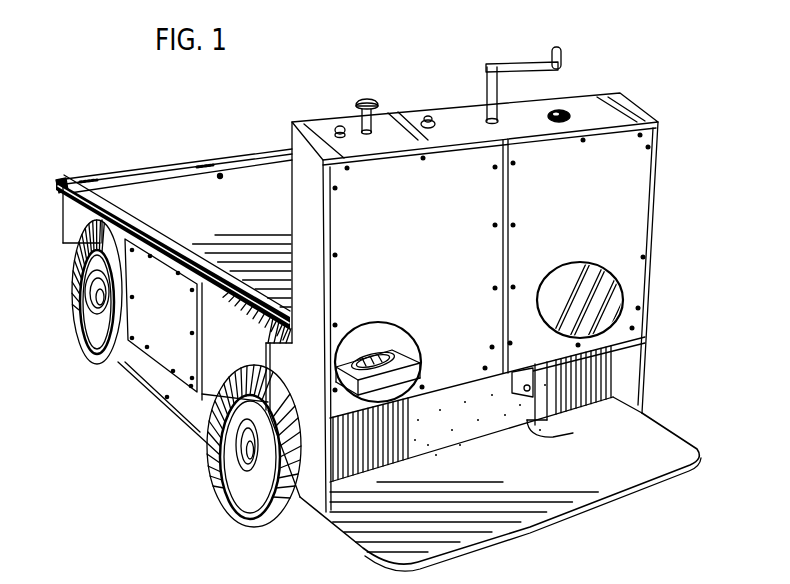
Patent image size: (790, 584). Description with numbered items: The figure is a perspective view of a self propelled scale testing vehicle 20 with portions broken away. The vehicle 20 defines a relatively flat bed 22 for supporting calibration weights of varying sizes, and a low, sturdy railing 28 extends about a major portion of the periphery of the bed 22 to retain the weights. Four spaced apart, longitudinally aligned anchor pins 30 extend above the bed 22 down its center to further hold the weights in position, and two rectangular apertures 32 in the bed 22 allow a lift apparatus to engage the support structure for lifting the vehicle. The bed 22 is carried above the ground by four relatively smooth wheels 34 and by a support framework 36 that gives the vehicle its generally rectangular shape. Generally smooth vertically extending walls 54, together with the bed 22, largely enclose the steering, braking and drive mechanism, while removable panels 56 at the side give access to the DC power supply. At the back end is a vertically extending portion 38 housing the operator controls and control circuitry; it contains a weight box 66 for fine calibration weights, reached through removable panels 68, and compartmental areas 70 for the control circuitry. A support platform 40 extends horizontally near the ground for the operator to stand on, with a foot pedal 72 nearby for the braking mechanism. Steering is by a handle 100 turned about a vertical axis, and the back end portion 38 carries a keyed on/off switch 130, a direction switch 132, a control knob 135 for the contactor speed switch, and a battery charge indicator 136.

The self propelled scale testing vehicle 20 is at (299, 36).
The bed 22 is at (133, 182).
The railing 28 is at (65, 177).
The anchor pins 30 is at (220, 175).
The rectangular apertures 32 is at (251, 200).
The wheels 34 is at (109, 348).
The support framework 36 is at (181, 423).
The vertically extending portion 38 is at (641, 107).
The support platform 40 is at (607, 490).
The vertically extending walls 54 is at (152, 375).
The removable panels 56 is at (150, 267).
The weight box 66 is at (402, 357).
The removable panels 68 is at (638, 190).
The compartmental areas 70 is at (380, 330).
The foot pedal 72 is at (553, 437).
The handle 100 is at (513, 64).
The keyed on/off switch 130 is at (338, 126).
The direction switch 132 is at (427, 117).
The control knob 135 is at (367, 99).
The battery charge indicator 136 is at (565, 110).